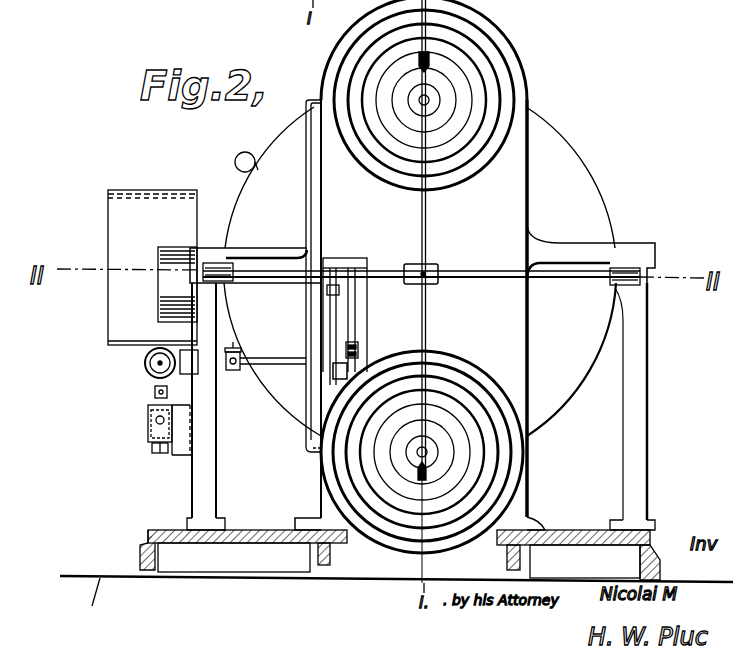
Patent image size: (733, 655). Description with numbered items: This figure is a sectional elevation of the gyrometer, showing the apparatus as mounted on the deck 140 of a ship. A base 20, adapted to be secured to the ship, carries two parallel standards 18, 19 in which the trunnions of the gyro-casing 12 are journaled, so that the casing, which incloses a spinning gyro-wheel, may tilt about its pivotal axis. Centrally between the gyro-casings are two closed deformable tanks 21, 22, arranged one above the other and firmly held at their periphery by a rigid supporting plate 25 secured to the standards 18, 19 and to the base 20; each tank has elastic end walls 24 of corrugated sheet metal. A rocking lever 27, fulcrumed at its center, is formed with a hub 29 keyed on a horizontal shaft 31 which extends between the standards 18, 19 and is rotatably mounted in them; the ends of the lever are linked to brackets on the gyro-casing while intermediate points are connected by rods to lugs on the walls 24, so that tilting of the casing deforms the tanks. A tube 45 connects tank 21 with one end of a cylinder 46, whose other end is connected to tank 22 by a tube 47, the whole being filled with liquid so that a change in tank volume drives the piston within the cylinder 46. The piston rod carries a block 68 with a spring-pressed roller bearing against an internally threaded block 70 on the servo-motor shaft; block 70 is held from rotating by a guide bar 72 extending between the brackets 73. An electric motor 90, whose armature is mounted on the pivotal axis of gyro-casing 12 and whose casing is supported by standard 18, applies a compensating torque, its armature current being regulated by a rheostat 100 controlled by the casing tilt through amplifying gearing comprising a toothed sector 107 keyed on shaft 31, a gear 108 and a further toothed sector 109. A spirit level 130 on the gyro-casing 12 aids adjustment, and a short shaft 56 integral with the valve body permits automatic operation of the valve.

The gyro-casing 12 is at (598, 204).
The standard 18 is at (200, 331).
The standard 19 is at (636, 352).
The base 20 is at (250, 545).
The deformable tank 21 is at (528, 110).
The deformable tank 22 is at (515, 456).
The elastic end wall 24 is at (490, 78).
The supporting plate 25 is at (502, 183).
The rocking lever 27 is at (428, 240).
The hub 29 is at (440, 285).
The shaft 31 is at (520, 282).
The tube 45 is at (309, 193).
The cylinder 46 is at (145, 362).
The tube 47 is at (330, 405).
The short shaft 56 is at (243, 353).
The block 68 is at (155, 393).
The internally threaded block 70 is at (148, 424).
The guide bar 72 is at (152, 449).
The bracket 73 is at (180, 452).
The electric motor 90 is at (122, 203).
The rheostat 100 is at (167, 300).
The toothed sector 107 is at (357, 308).
The gear 108 is at (352, 337).
The toothed sector 109 is at (345, 292).
The spirit level 130 is at (235, 164).
The deck 140 is at (111, 595).